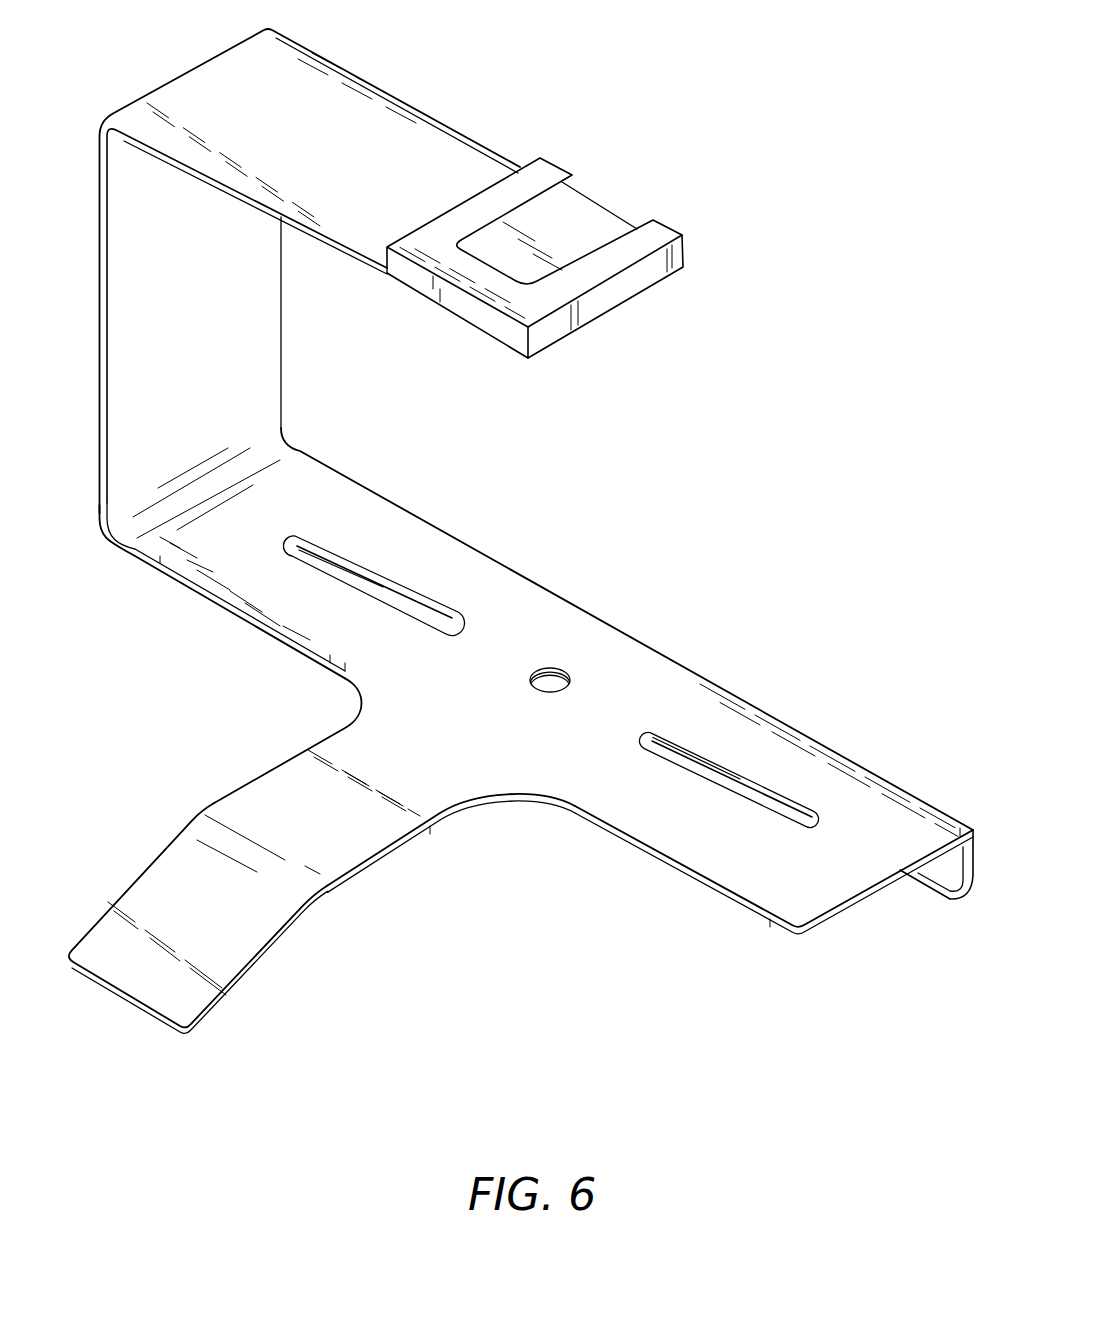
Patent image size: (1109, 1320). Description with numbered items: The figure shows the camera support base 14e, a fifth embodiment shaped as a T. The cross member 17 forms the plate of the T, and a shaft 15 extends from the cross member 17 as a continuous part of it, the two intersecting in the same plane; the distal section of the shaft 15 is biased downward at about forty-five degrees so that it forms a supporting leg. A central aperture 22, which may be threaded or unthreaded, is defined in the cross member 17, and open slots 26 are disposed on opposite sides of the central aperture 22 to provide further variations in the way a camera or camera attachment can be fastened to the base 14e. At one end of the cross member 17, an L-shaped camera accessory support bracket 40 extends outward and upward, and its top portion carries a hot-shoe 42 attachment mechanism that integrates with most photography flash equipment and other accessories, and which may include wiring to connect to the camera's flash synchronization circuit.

The camera accessory support bracket 40 is at (263, 342).
The hot-shoe 42 is at (577, 224).
The open slots 26 is at (383, 588).
The central aperture 22 is at (552, 669).
The cross member 17 is at (645, 812).
The camera support base 14e is at (372, 864).
The shaft 15 is at (267, 790).